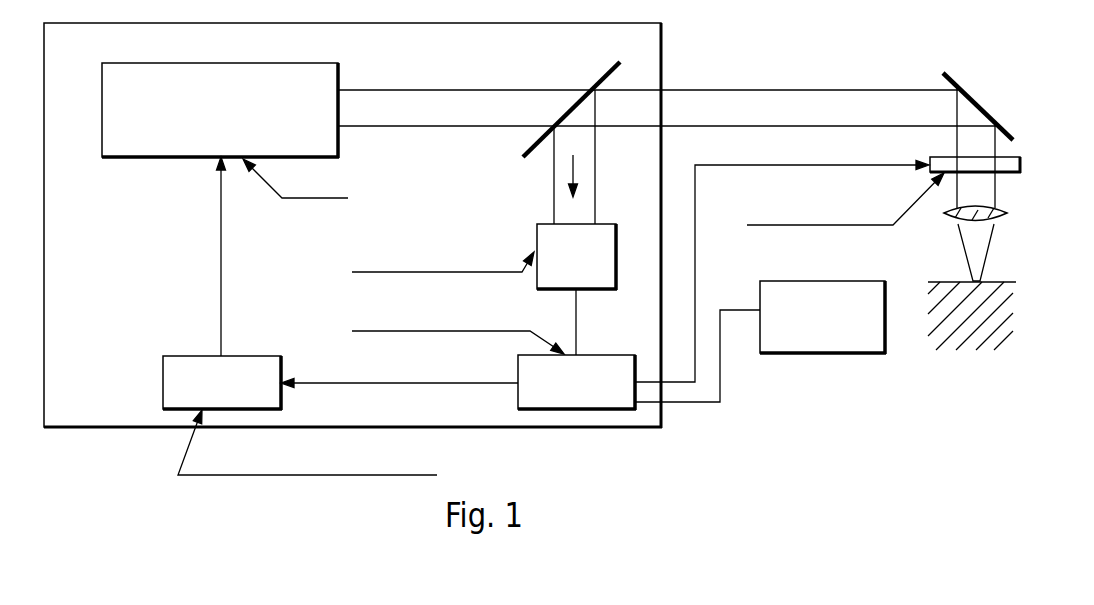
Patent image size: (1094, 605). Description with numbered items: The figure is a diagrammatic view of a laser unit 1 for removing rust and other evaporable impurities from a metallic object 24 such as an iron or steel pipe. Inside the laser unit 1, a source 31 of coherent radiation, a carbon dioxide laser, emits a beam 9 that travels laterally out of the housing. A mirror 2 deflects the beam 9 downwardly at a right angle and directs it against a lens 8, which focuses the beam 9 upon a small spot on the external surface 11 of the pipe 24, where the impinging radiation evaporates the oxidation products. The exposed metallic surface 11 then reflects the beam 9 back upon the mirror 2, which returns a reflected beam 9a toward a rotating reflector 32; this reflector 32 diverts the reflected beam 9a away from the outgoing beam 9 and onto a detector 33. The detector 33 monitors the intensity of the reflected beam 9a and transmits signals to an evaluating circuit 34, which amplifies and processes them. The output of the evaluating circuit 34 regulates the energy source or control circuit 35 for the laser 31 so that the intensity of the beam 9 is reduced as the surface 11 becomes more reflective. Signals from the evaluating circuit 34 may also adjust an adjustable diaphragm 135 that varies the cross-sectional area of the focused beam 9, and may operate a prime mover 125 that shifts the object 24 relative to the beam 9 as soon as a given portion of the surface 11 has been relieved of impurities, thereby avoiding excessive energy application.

The laser unit 1 is at (137, 266).
The source of coherent radiation 31 is at (214, 118).
The beam 9 is at (474, 112).
The rotating reflector 32 is at (600, 80).
The reflected beam 9a is at (590, 175).
The detector 33 is at (583, 269).
The evaluating circuit 34 is at (586, 399).
The energy source 35 is at (230, 397).
The mirror 2 is at (951, 77).
The adjustable diaphragm 135 is at (1008, 163).
The lens 8 is at (999, 216).
The surface 11 is at (1005, 282).
The metallic object 24 is at (949, 320).
The prime mover 125 is at (832, 345).